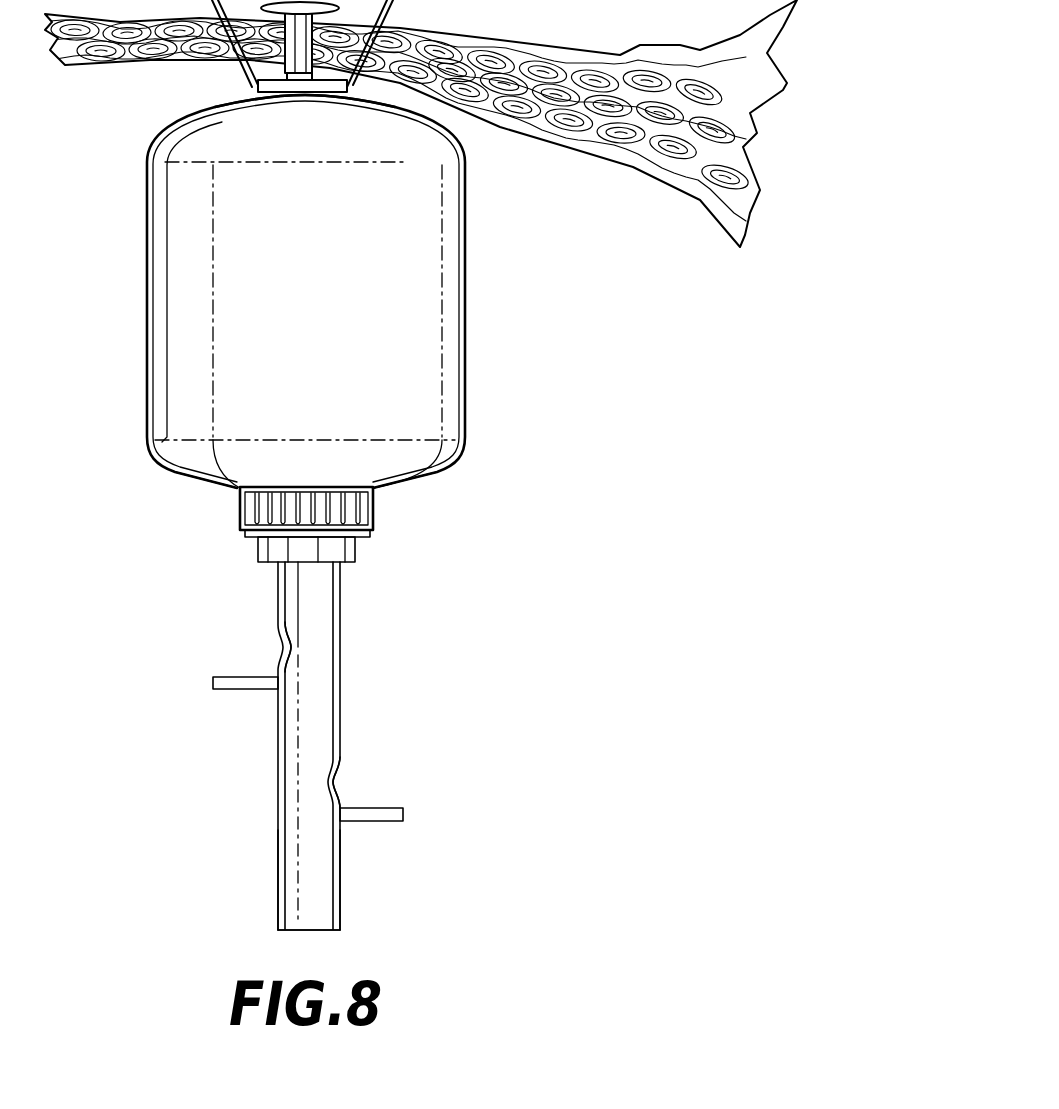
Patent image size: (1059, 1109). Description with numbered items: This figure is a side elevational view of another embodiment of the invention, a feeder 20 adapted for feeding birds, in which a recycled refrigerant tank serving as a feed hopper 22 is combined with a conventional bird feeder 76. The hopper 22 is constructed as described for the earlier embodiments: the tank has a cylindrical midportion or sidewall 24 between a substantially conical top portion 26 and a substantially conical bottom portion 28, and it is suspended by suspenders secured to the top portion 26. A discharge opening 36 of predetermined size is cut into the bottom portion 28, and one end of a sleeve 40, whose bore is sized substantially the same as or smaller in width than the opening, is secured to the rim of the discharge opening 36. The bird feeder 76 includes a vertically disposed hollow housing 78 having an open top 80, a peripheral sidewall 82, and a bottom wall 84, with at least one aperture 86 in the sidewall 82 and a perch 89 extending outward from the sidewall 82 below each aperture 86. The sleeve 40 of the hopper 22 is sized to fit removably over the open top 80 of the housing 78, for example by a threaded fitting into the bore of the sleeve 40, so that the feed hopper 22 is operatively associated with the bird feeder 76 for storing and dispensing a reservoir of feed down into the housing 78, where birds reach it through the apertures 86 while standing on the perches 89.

The feeder 20 is at (505, 321).
The feed hopper 22 is at (463, 428).
The sidewall 24 is at (147, 345).
The top portion 26 is at (445, 135).
The bottom portion 28 is at (222, 488).
The discharge opening 36 is at (375, 485).
The sleeve 40 is at (247, 532).
The open top 80 is at (355, 563).
The peripheral sidewall 82 is at (277, 582).
The bird feeder 76 is at (340, 633).
The aperture 86 is at (333, 772).
The perch 89 is at (400, 818).
The hollow housing 78 is at (277, 833).
The bottom wall 84 is at (327, 930).